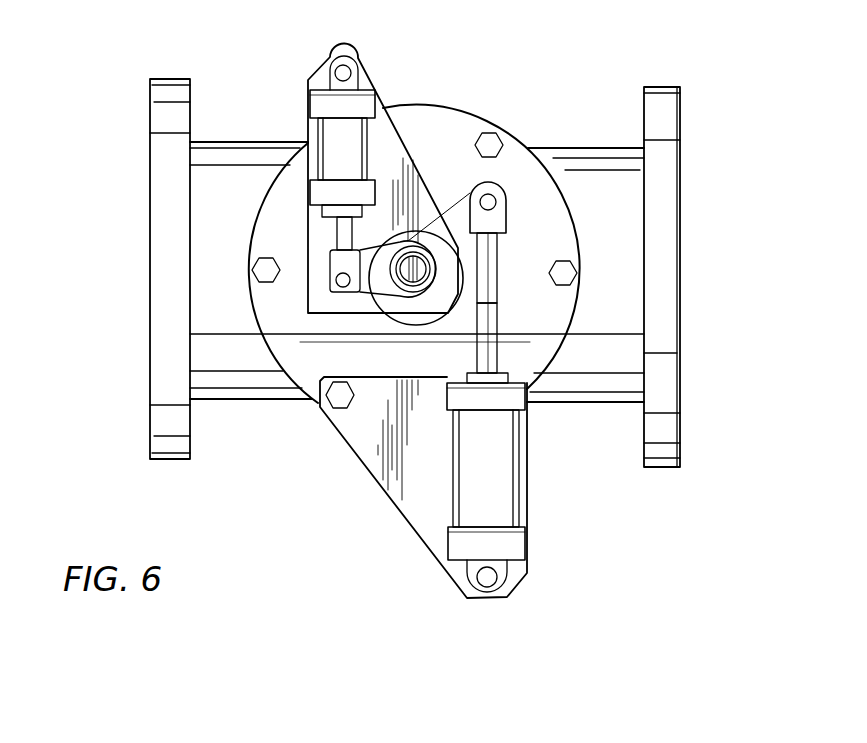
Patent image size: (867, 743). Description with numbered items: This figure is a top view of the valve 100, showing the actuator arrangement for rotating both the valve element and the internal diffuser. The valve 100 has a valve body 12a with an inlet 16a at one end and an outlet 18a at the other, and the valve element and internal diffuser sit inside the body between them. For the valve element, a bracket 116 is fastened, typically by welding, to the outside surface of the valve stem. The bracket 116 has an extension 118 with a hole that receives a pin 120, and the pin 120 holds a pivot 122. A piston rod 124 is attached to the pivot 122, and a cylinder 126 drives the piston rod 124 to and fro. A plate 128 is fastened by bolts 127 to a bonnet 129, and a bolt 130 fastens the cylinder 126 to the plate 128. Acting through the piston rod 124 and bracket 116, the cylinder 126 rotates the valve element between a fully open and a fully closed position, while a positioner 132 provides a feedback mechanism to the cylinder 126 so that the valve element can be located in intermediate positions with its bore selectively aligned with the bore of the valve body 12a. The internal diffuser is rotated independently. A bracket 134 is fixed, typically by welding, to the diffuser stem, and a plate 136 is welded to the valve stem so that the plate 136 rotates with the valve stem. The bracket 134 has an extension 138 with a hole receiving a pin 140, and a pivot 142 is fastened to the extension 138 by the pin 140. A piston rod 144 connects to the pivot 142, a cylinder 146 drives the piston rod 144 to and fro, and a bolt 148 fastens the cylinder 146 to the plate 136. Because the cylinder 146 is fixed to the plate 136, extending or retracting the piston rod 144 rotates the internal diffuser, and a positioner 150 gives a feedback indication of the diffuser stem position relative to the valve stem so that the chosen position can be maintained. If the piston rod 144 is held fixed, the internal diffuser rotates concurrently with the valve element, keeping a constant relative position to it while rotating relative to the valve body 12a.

The valve 100 is at (530, 82).
The valve body 12a is at (592, 147).
The inlet 16a is at (152, 345).
The outlet 18a is at (683, 262).
The bracket 116 is at (459, 205).
The extension 118 is at (472, 190).
The pin 120 is at (497, 197).
The pivot 122 is at (508, 213).
The piston rod 124 is at (498, 316).
The cylinder 126 is at (517, 475).
The bolts 127 is at (342, 413).
The plate 128 is at (367, 472).
The bonnet 129 is at (579, 300).
The bolt 130 is at (510, 573).
The positioner 132 is at (552, 343).
The bracket 134 is at (366, 300).
The plate 136 is at (370, 73).
The extension 138 is at (371, 294).
The pin 140 is at (328, 290).
The pivot 142 is at (328, 252).
The piston rod 144 is at (335, 227).
The cylinder 146 is at (313, 128).
The bolt 148 is at (335, 70).
The positioner 150 is at (498, 248).